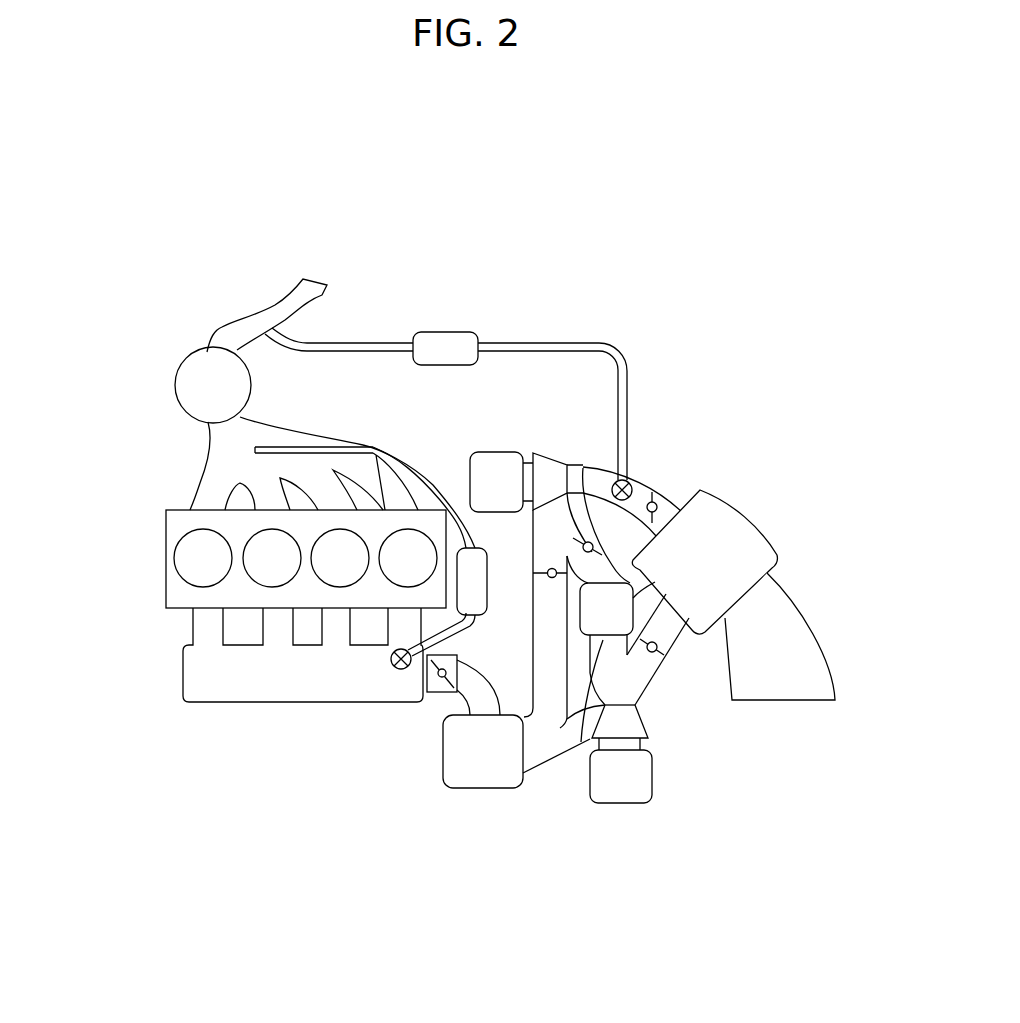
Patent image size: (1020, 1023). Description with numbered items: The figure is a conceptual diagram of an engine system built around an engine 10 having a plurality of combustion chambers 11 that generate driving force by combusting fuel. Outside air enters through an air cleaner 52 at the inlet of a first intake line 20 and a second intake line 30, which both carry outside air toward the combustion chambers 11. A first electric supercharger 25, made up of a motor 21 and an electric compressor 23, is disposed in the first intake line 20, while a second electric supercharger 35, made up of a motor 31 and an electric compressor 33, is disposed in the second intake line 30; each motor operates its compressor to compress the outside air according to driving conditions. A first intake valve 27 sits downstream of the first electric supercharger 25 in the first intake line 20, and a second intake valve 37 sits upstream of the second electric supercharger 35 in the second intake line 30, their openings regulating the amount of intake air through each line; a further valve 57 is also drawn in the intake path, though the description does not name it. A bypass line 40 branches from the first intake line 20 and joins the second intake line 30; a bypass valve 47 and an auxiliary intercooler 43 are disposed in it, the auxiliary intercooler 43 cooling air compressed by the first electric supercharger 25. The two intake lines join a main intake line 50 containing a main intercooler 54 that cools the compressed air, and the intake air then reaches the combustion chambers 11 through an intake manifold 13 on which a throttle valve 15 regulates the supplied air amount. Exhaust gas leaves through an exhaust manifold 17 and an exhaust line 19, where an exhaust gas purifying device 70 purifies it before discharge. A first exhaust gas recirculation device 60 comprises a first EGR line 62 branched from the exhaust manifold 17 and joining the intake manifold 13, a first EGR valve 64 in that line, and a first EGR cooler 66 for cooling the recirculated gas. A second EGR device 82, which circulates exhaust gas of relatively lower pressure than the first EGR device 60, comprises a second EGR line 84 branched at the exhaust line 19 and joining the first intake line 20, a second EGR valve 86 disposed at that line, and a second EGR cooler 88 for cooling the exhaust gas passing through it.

The engine 10 is at (142, 623).
The combustion chamber 11 is at (175, 563).
The intake manifold 13 is at (184, 672).
The throttle valve 15 is at (427, 671).
The exhaust manifold 17 is at (202, 492).
The exhaust line 19 is at (256, 313).
The first intake line 20 is at (634, 481).
The motor 21 is at (497, 451).
The electric compressor 23 is at (558, 455).
The first electric supercharger 25 is at (526, 437).
The first intake valve 27 is at (550, 575).
The second intake line 30 is at (683, 639).
The motor 31 is at (621, 804).
The electric compressor 33 is at (645, 723).
The second electric supercharger 35 is at (653, 801).
The second intake valve 37 is at (658, 658).
The bypass line 40 is at (581, 742).
The auxiliary intercooler 43 is at (707, 491).
The bypass valve 47 is at (583, 465).
The main intake line 50 is at (480, 668).
The air cleaner 52 is at (760, 535).
The main intercooler 54 is at (483, 789).
The intake valve 57 is at (666, 496).
The first exhaust gas recirculation device 60 is at (374, 708).
The first EGR line 62 is at (434, 633).
The first EGR valve 64 is at (390, 660).
The first EGR cooler 66 is at (485, 553).
The exhaust gas purifying device 70 is at (175, 384).
The second EGR device 82 is at (511, 391).
The second EGR line 84 is at (628, 342).
The second EGR valve 86 is at (632, 480).
The second EGR cooler 88 is at (445, 331).